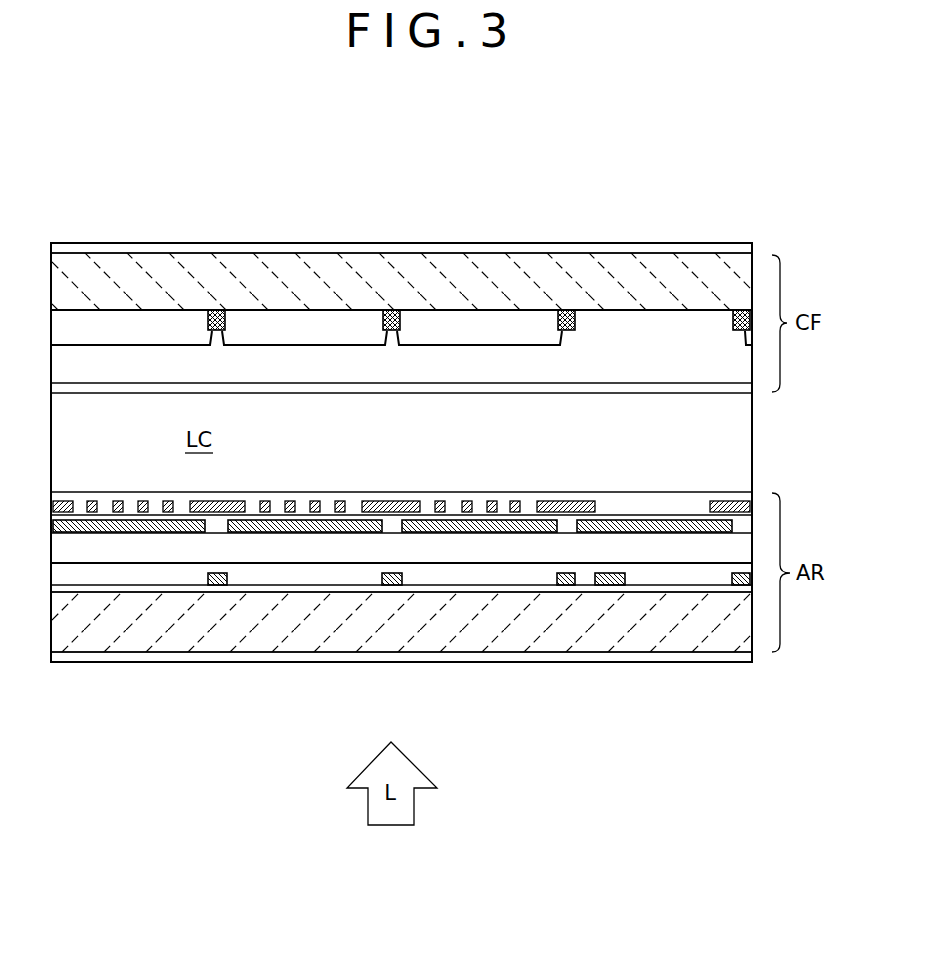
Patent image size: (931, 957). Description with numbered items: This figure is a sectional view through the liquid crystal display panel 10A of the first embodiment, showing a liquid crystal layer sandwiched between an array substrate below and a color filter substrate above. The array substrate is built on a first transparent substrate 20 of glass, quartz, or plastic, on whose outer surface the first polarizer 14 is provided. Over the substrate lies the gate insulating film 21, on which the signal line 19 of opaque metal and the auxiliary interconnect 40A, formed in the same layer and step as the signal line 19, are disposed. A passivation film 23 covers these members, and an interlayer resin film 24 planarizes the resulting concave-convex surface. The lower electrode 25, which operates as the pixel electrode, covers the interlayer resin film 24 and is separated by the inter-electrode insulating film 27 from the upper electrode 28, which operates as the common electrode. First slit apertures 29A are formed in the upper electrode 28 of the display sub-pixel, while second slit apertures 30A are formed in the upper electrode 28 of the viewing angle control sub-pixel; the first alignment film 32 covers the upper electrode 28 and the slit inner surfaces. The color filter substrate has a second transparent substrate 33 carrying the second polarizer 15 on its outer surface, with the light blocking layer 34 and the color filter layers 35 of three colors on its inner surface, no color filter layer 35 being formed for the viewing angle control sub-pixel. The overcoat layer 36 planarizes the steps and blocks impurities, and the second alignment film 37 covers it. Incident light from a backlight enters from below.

The liquid crystal display panel 10A is at (413, 160).
The first polarizer 14 is at (107, 655).
The second polarizer 15 is at (220, 253).
The signal line 19 is at (215, 586).
The first transparent substrate 20 is at (163, 620).
The gate insulating film 21 is at (275, 593).
The passivation film 23 is at (333, 575).
The interlayer resin film 24 is at (460, 550).
The lower electrode 25 is at (280, 522).
The inter-electrode insulating film 27 is at (327, 512).
The upper electrode 28 is at (439, 501).
The first slit apertures 29A is at (501, 512).
The second slit apertures 30A is at (623, 510).
The first alignment film 32 is at (675, 498).
The second transparent substrate 33 is at (290, 295).
The light blocking layer 34 is at (564, 310).
The color filter layers 35 is at (481, 318).
The overcoat layer 36 is at (645, 355).
The second alignment film 37 is at (705, 387).
The auxiliary interconnect 40A is at (607, 586).